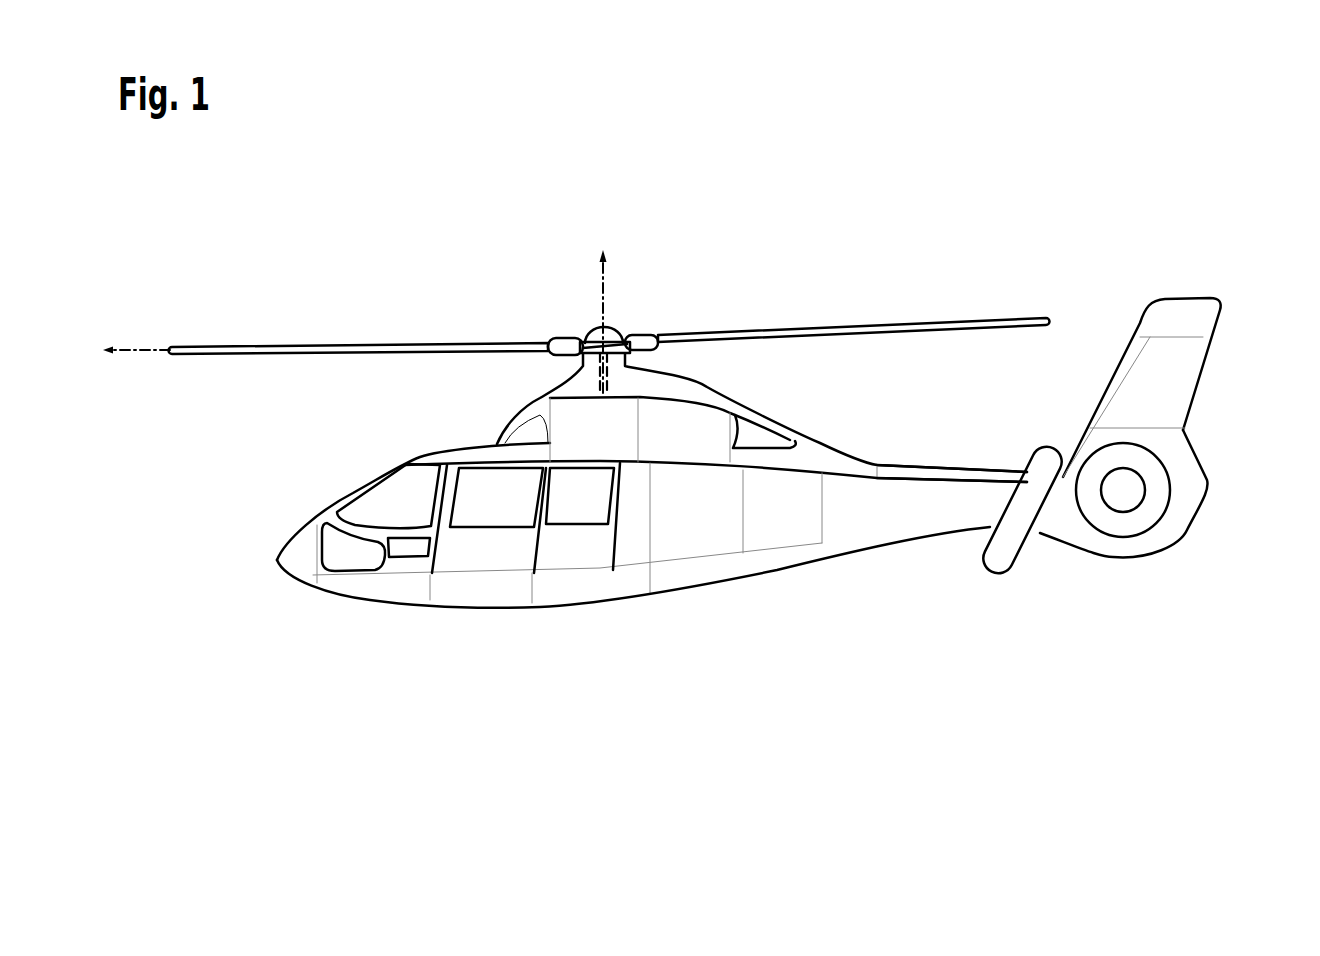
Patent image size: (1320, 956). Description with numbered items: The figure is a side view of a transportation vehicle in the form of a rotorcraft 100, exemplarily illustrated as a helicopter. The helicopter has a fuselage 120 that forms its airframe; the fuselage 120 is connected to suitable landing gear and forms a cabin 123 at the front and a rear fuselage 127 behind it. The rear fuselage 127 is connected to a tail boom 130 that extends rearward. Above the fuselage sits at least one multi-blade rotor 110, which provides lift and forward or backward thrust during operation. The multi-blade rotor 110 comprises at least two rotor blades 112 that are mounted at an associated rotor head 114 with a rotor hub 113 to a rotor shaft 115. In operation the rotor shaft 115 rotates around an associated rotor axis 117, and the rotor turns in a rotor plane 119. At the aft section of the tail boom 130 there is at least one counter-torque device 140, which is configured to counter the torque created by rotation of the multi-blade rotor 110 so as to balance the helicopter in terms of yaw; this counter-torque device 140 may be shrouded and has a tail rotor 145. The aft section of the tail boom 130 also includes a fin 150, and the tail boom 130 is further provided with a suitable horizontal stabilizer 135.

The rotorcraft 100 is at (444, 242).
The multi-blade rotor 110 is at (419, 335).
The rotor blades 112 is at (267, 345).
The rotor hub 113 is at (574, 322).
The rotor head 114 is at (636, 317).
The rotor shaft 115 is at (600, 387).
The rotor axis 117 is at (603, 310).
The rotor plane 119 is at (130, 345).
The fuselage 120 is at (677, 582).
The cabin 123 is at (383, 498).
The rear fuselage 127 is at (778, 576).
The tail boom 130 is at (955, 490).
The horizontal stabilizer 135 is at (1013, 547).
The counter-torque device 140 is at (1186, 470).
The tail rotor 145 is at (1140, 521).
The fin 150 is at (1177, 333).